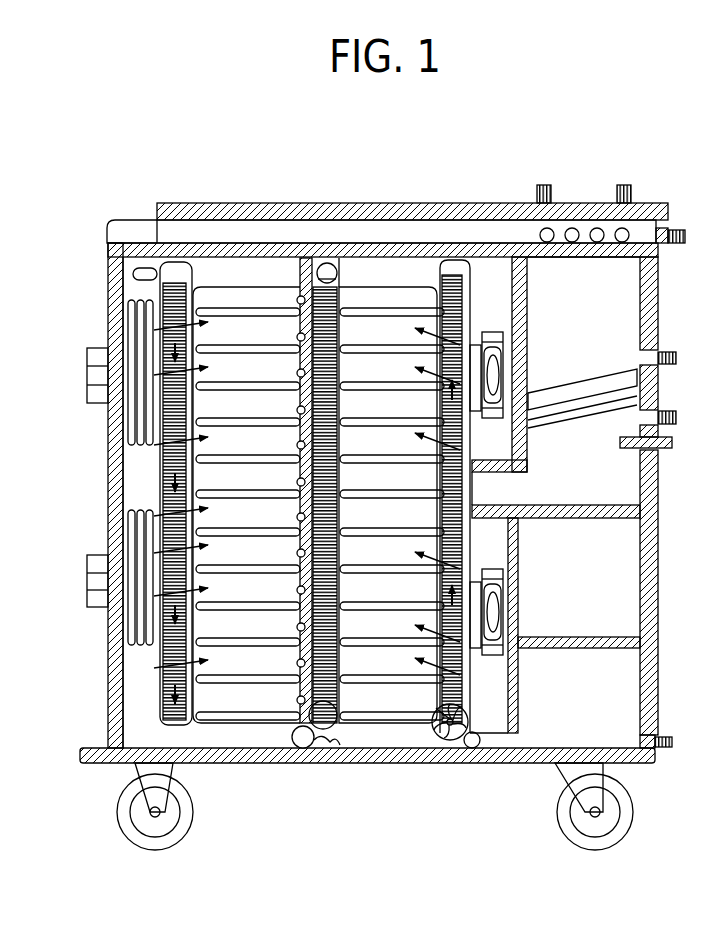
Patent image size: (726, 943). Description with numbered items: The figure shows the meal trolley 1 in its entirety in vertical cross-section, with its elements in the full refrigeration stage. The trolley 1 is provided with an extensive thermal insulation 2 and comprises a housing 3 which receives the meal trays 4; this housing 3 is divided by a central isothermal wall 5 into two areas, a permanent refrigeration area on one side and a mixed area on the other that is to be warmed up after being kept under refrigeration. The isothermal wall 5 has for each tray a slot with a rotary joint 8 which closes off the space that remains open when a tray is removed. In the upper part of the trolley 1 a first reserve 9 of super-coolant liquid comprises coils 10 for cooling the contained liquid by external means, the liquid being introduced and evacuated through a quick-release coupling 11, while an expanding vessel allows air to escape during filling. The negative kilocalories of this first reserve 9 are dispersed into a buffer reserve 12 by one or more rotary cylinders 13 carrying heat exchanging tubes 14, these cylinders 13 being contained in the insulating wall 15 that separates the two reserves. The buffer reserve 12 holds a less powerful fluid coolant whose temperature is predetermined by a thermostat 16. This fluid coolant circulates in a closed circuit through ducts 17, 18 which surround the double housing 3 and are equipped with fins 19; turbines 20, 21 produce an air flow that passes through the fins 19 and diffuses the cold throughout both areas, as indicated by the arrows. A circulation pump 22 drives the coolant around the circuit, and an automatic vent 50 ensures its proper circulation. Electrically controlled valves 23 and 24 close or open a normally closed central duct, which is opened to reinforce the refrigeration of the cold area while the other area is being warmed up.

The trolley 1 is at (108, 252).
The thermal insulation 2 is at (380, 212).
The housing 3 is at (235, 293).
The meal trays 4 is at (252, 385).
The isothermal wall 5 is at (299, 466).
The rotary joint 8 is at (297, 664).
The first reserve 9 is at (581, 362).
The coils 10 is at (570, 233).
The quick-release coupling 11 is at (683, 207).
The buffer reserve 12 is at (584, 503).
The rotary cylinders 13 is at (592, 390).
The heat exchanging tubes 14 is at (625, 393).
The insulating wall 15 is at (554, 420).
The thermostat 16 is at (658, 448).
The duct 17 is at (462, 294).
The duct 18 is at (165, 290).
The fins 19 is at (173, 710).
The turbine 20 is at (493, 418).
The turbine 21 is at (138, 446).
The circulation pump 22 is at (453, 738).
The electrically controlled valve 23 is at (325, 262).
The electrically controlled valve 24 is at (330, 722).
The automatic vent 50 is at (134, 273).